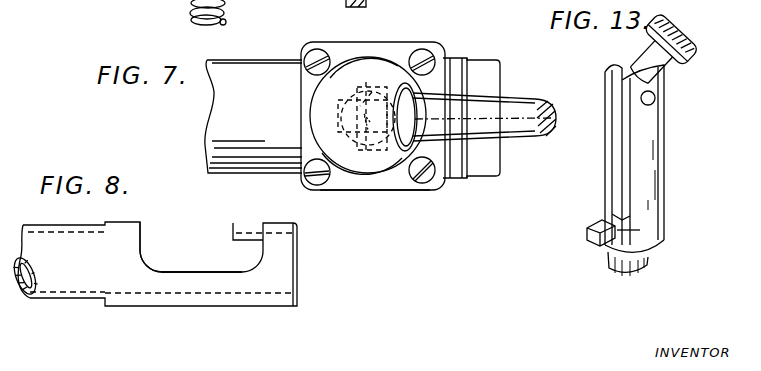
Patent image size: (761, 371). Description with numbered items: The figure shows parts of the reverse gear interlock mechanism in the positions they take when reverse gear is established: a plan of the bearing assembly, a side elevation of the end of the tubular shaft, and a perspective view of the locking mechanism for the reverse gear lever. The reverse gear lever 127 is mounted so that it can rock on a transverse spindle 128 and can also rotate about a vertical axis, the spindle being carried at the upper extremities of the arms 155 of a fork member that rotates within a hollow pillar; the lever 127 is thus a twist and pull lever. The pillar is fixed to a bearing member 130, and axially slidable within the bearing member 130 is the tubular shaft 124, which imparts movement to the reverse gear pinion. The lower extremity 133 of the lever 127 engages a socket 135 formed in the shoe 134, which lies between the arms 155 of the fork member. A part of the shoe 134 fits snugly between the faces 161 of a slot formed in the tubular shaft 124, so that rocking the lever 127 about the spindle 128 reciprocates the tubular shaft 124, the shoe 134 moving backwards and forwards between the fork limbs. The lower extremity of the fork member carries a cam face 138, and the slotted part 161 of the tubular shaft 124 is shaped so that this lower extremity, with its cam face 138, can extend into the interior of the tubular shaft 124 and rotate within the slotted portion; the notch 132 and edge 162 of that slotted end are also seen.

In FIG. 8, the tubular shaft 124 is at (72, 243).
In FIG. 7, the reverse gear lever 127 is at (503, 103).
In FIG. 13, the reverse gear lever 127 is at (691, 43).
In FIG. 7, the transverse spindle 128 is at (384, 78).
In FIG. 13, the transverse spindle 128 is at (649, 98).
In FIG. 7, the bearing member 130 is at (268, 76).
In FIG. 8, the notch 132 is at (172, 261).
In FIG. 13, the lower extremity of the reverse control lever 133 is at (621, 218).
In FIG. 13, the shoe 134 is at (603, 233).
In FIG. 13, the socket 135 is at (628, 229).
In FIG. 7, the cam face 138 is at (371, 191).
In FIG. 13, the cam face 138 is at (647, 258).
In FIG. 13, the arms of the fork member 155 is at (661, 143).
In FIG. 8, the faces of the slot in the tubular shaft 161 is at (143, 238).
In FIG. 8, the bottom edge of notch 162 is at (207, 274).